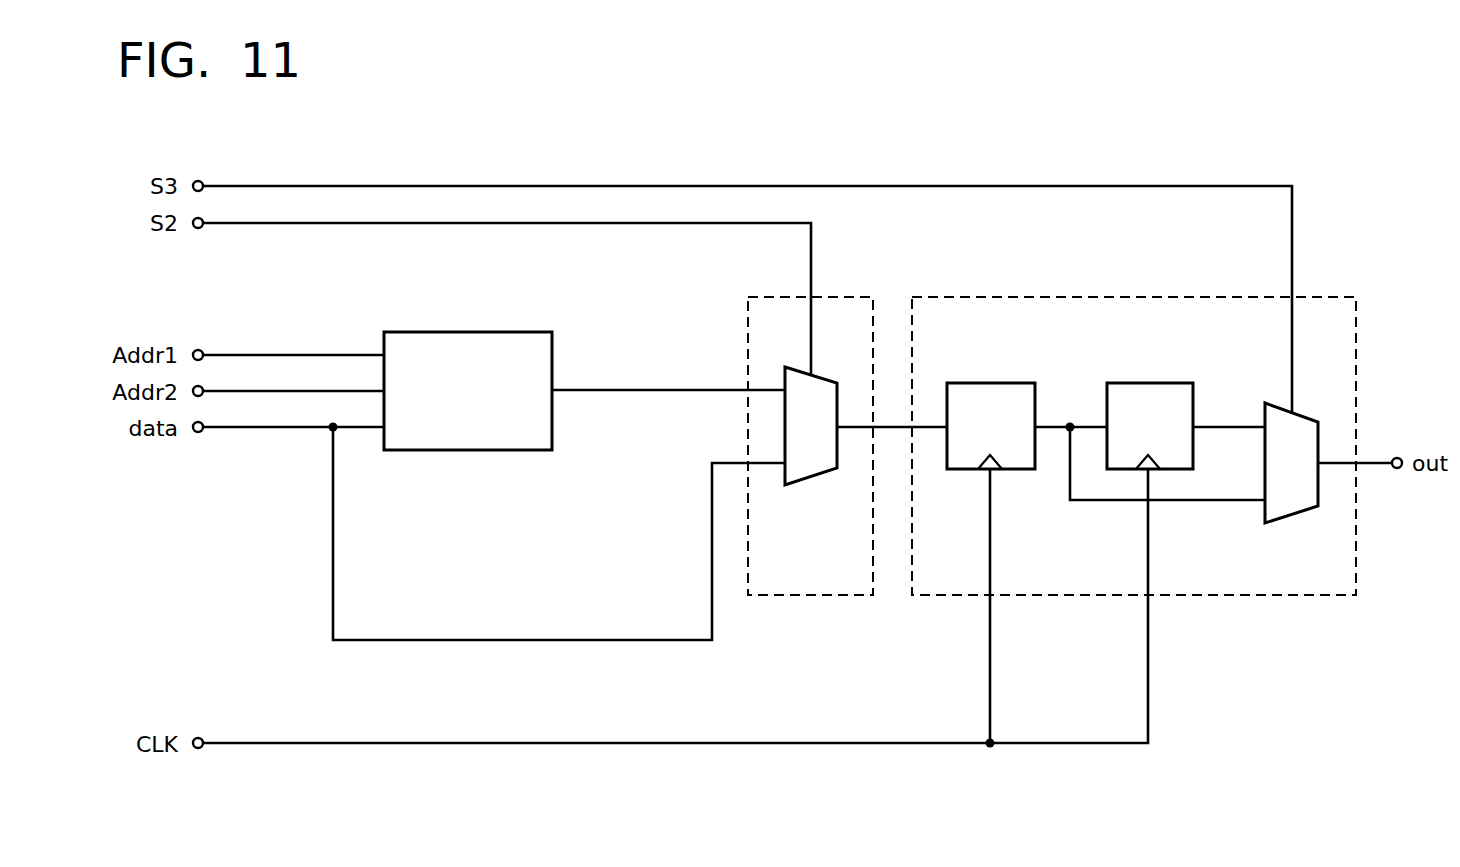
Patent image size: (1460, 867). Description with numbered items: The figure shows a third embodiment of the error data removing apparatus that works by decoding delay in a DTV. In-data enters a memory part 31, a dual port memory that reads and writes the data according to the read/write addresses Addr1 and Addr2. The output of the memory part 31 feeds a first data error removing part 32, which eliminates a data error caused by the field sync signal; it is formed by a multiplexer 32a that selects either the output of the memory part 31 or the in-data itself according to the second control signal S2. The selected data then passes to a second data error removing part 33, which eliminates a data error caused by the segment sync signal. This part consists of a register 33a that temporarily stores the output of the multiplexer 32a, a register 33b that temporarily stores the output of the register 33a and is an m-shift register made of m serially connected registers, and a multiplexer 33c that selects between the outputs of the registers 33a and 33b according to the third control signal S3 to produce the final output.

The memory part 31 is at (470, 332).
The first data error removing part 32 is at (847, 293).
The multiplexer 32a is at (813, 485).
The second data error removing part 33 is at (1132, 293).
The register 33a is at (992, 383).
The register 33b is at (1150, 383).
The multiplexer 33c is at (1292, 523).